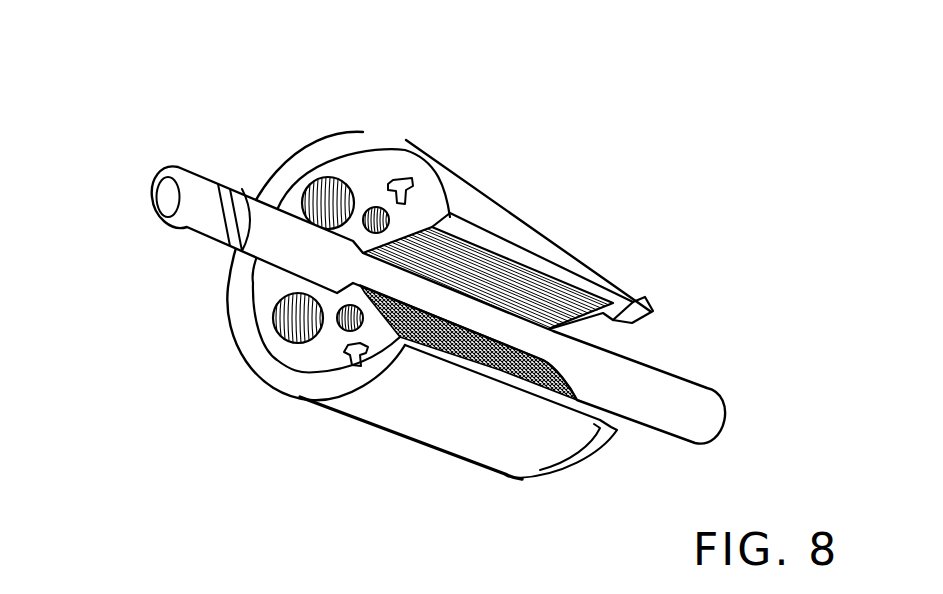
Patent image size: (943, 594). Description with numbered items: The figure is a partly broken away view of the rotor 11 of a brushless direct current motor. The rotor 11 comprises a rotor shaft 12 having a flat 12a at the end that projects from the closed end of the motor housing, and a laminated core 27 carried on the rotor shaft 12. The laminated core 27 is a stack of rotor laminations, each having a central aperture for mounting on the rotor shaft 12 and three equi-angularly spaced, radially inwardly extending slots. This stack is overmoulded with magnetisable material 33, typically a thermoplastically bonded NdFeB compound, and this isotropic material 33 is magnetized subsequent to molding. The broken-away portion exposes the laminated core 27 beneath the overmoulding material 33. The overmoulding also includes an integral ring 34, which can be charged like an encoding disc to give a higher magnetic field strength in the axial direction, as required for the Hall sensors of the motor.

The rotor 11 is at (470, 138).
The rotor shaft 12 is at (252, 245).
The flat 12a is at (207, 195).
The laminated core 27 is at (526, 290).
The magnetisable material 33 is at (503, 250).
The integral ring 34 is at (640, 317).